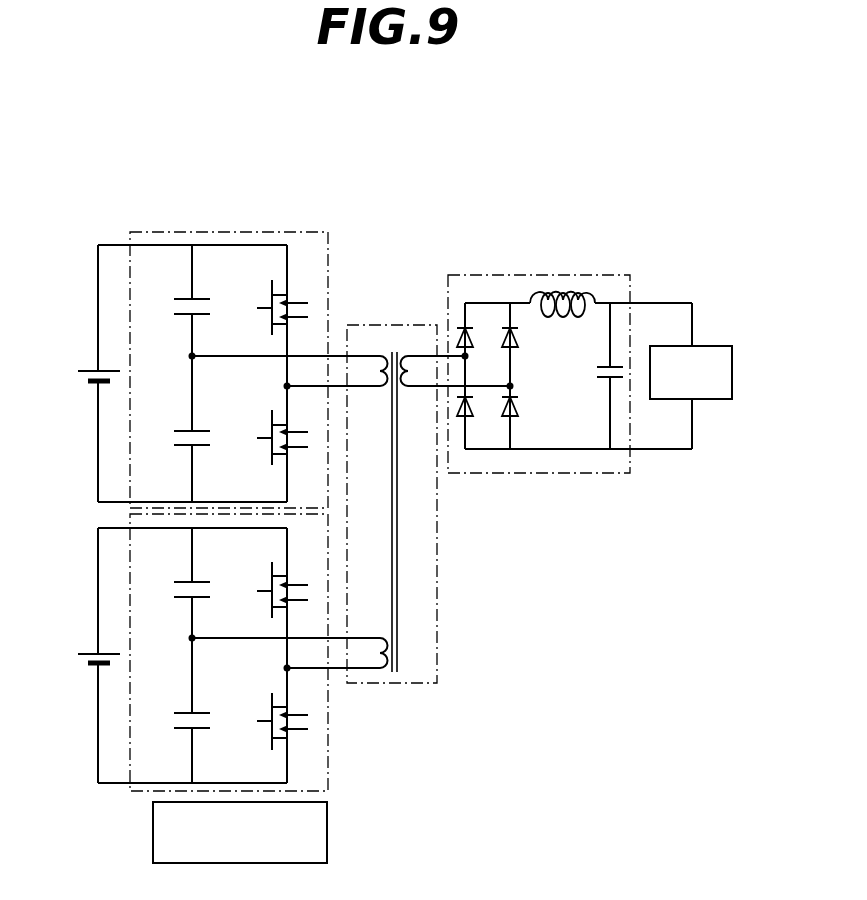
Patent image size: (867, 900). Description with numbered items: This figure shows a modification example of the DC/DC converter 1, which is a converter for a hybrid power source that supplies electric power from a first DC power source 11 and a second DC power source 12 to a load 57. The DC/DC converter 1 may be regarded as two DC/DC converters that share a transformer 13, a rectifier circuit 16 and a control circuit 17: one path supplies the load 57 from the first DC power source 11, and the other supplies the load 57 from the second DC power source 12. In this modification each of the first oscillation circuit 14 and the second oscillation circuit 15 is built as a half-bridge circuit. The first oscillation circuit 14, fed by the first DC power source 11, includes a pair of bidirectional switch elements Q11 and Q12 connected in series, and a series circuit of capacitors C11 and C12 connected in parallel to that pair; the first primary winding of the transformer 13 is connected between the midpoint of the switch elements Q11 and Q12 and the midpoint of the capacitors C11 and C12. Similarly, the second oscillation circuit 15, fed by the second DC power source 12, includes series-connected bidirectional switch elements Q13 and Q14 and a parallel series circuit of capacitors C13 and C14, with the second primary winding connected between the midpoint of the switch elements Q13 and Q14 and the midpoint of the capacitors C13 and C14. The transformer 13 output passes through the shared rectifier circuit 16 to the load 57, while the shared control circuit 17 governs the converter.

The DC/DC converter 1 is at (373, 185).
The first DC power source 11 is at (85, 363).
The second DC power source 12 is at (85, 645).
The transformer 13 is at (437, 598).
The first oscillation circuit 14 is at (222, 232).
The second oscillation circuit 15 is at (328, 766).
The rectifier circuit 16 is at (525, 275).
The control circuit 17 is at (328, 826).
The load 57 is at (720, 346).
The capacitor C11 is at (176, 300).
The capacitor C12 is at (176, 429).
The capacitor C13 is at (176, 583).
The capacitor C14 is at (176, 710).
The bidirectional switch element Q11 is at (267, 303).
The bidirectional switch element Q12 is at (267, 433).
The bidirectional switch element Q13 is at (267, 585).
The bidirectional switch element Q14 is at (267, 717).